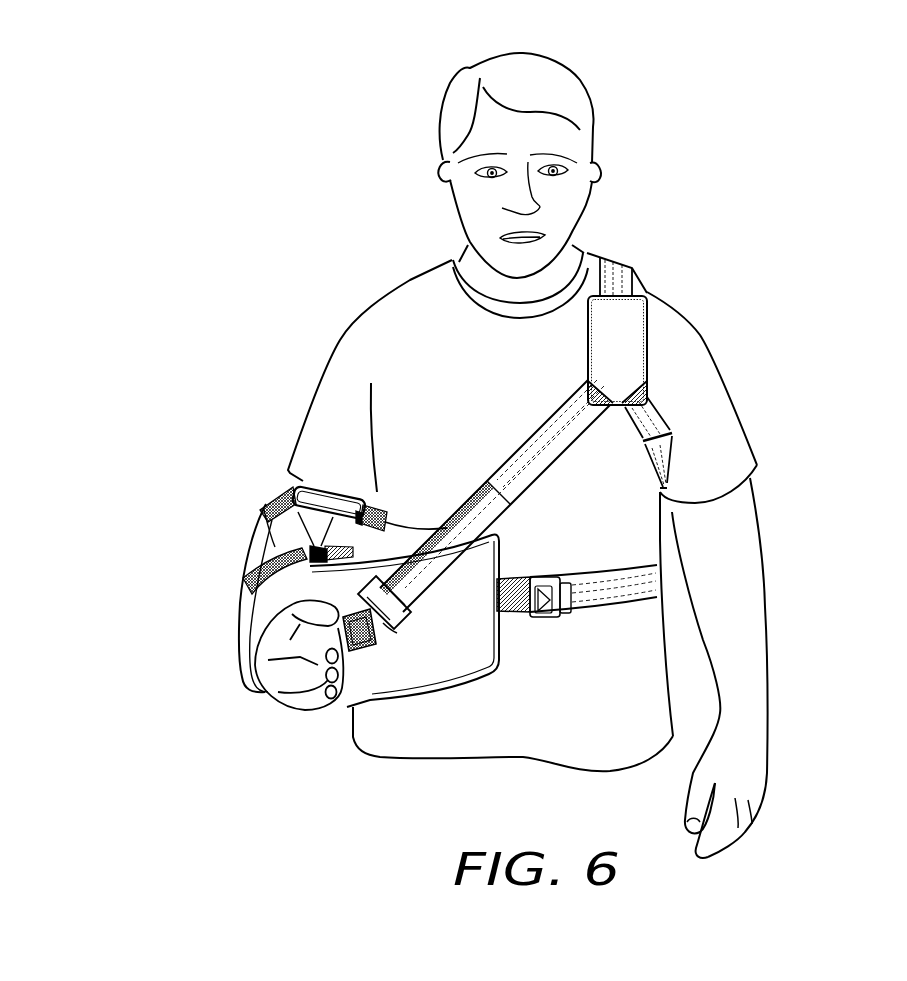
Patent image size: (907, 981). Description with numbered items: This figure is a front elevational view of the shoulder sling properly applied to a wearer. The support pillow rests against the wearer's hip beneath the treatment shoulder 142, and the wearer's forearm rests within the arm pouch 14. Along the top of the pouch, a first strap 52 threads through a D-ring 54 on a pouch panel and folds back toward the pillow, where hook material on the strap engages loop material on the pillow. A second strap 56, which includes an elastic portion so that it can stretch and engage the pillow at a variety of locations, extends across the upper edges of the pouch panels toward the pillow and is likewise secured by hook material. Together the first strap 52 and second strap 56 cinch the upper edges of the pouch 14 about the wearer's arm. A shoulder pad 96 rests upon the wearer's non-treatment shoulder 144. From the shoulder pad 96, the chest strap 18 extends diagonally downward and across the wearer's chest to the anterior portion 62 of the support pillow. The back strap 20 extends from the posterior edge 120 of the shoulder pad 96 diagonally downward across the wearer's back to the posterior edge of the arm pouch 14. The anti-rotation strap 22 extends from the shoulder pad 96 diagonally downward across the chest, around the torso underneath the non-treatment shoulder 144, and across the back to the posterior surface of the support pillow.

The arm pouch 14 is at (255, 535).
The chest strap 18 is at (542, 440).
The back strap 20 is at (623, 268).
The anti-rotation strap 22 is at (660, 408).
The first strap 52 is at (285, 622).
The D-ring 54 is at (310, 560).
The second strap 56 is at (368, 485).
The anterior portion 62 is at (362, 687).
The shoulder pad 96 is at (627, 355).
The posterior edge 120 is at (642, 287).
The treatment shoulder 142 is at (383, 307).
The non-treatment shoulder 144 is at (687, 350).